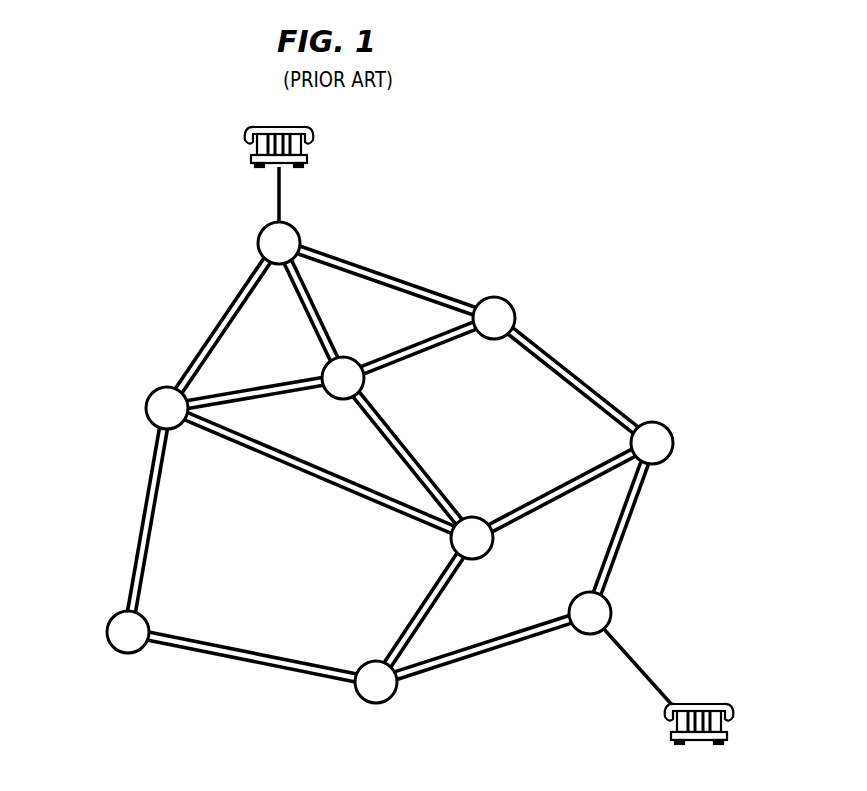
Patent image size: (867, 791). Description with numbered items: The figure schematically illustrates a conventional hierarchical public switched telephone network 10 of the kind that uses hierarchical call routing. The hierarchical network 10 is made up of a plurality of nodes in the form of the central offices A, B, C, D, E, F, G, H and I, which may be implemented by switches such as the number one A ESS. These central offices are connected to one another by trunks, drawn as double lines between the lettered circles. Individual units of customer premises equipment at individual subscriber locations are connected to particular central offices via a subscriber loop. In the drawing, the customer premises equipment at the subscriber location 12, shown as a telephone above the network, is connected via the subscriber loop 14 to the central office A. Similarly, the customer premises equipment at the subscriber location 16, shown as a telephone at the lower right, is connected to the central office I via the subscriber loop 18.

The hierarchical telephone network 10 is at (110, 349).
The subscriber location 12 is at (306, 154).
The subscriber loop 14 is at (281, 201).
The subscriber location 16 is at (736, 719).
The subscriber loop 18 is at (635, 650).